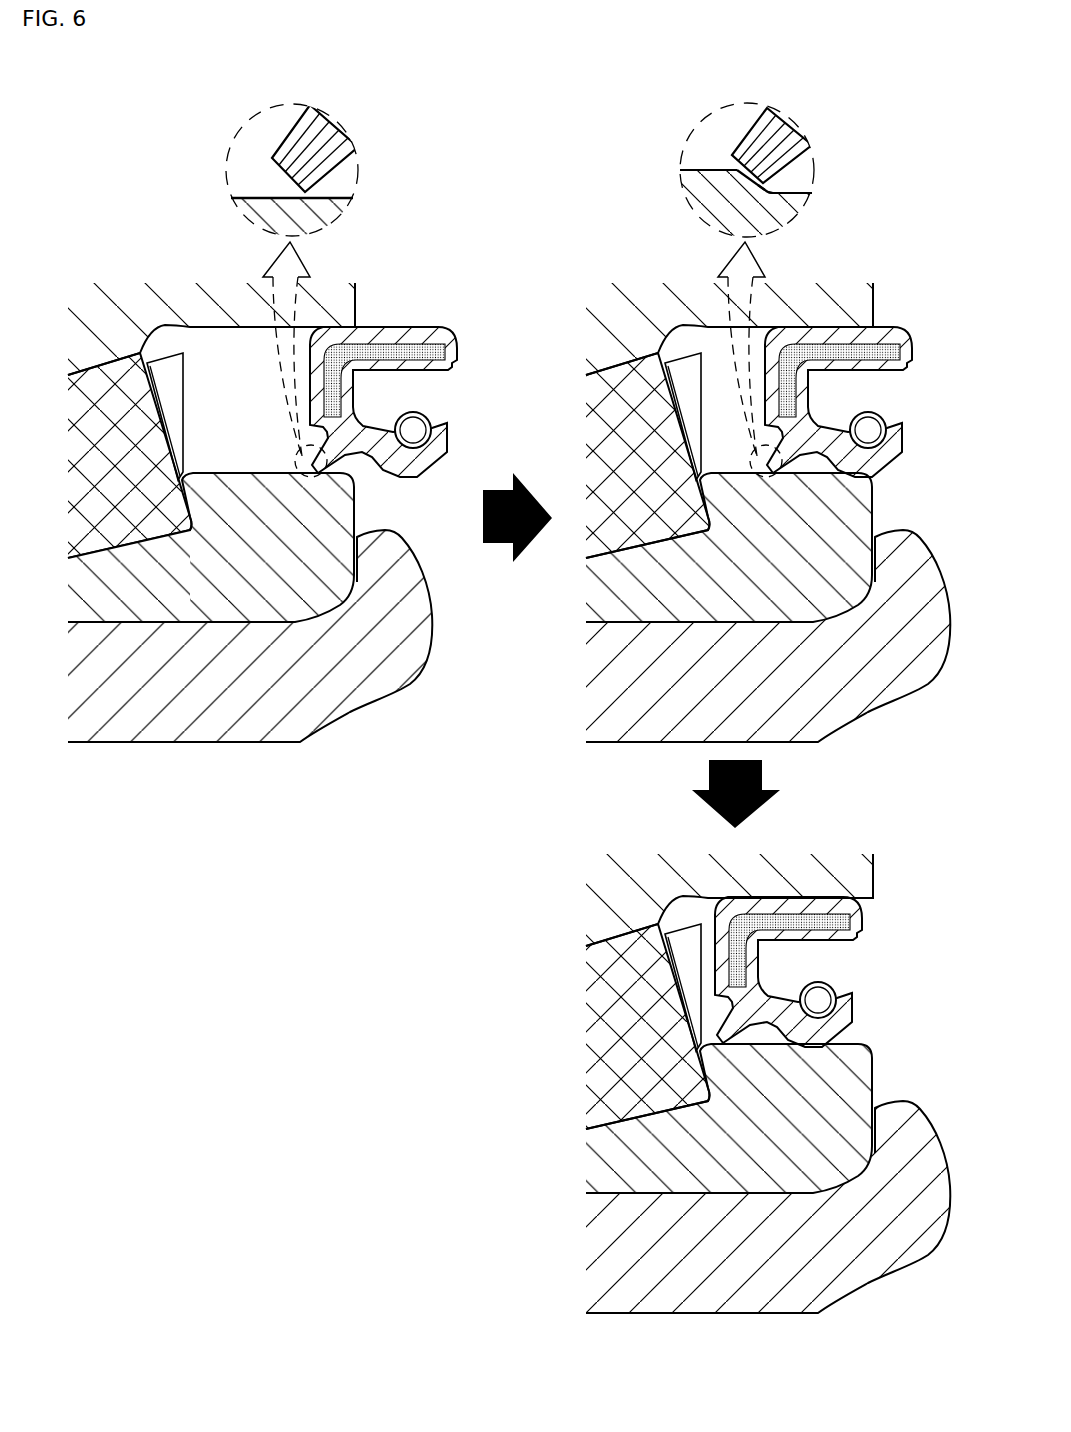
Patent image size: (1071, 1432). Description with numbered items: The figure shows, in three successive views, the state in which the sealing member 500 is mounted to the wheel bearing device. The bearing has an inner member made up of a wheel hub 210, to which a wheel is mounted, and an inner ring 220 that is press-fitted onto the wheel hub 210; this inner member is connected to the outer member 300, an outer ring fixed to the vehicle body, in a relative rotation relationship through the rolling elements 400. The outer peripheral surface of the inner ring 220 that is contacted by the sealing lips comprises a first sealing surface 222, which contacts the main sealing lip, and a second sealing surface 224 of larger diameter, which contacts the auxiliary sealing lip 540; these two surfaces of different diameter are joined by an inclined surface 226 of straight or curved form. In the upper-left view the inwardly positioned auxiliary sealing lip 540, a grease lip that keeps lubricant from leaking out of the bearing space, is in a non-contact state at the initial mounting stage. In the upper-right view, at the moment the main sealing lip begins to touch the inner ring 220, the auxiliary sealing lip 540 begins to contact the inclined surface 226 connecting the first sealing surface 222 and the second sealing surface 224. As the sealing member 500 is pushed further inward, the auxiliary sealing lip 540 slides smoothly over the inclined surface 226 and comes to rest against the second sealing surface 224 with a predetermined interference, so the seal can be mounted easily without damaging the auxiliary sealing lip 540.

The wheel hub 210 is at (633, 1257).
The inner ring 220 is at (323, 220).
The first sealing surface 222 is at (257, 198).
The second sealing surface 224 is at (700, 170).
The inclined surface 226 is at (762, 193).
The outer member 300 is at (848, 868).
The rolling elements 400 is at (623, 1028).
The sealing member 500 is at (850, 962).
The auxiliary sealing lip 540 is at (298, 137).